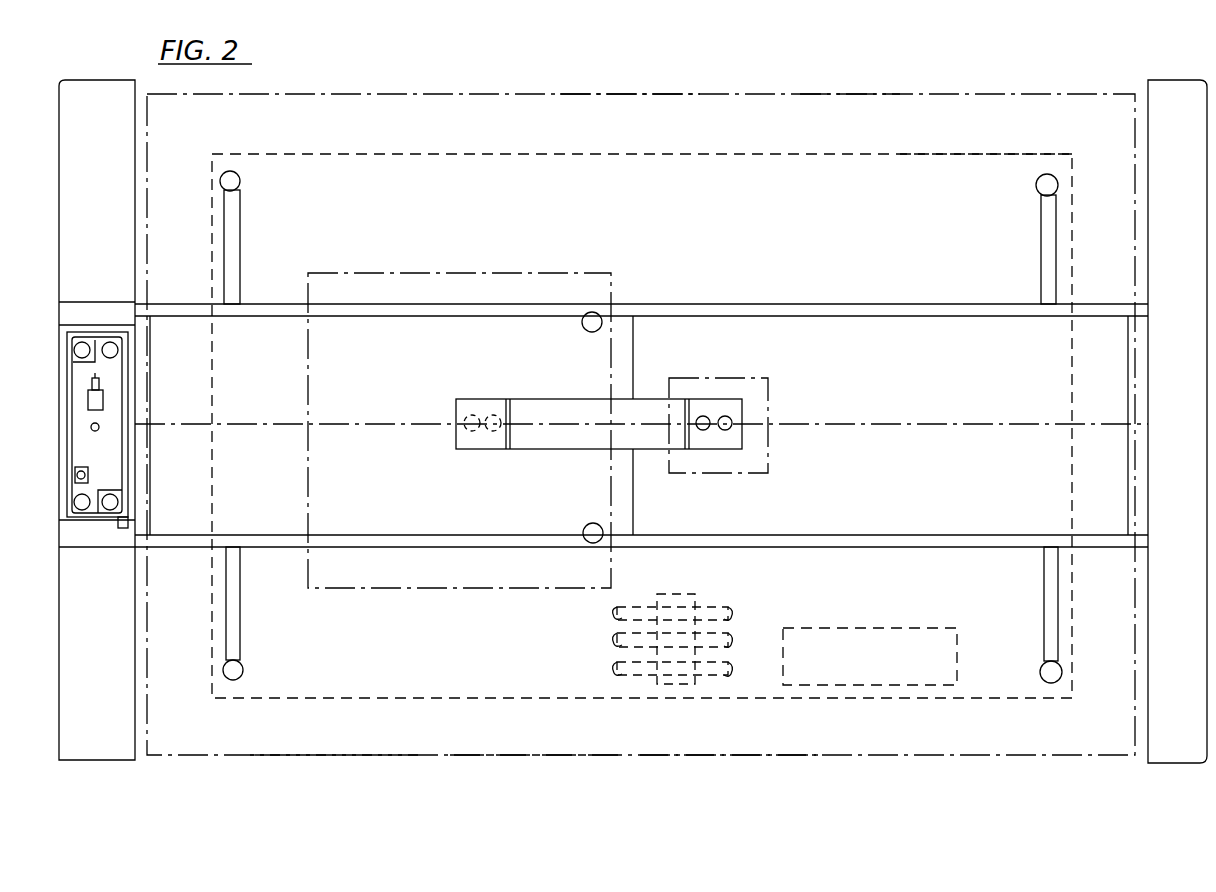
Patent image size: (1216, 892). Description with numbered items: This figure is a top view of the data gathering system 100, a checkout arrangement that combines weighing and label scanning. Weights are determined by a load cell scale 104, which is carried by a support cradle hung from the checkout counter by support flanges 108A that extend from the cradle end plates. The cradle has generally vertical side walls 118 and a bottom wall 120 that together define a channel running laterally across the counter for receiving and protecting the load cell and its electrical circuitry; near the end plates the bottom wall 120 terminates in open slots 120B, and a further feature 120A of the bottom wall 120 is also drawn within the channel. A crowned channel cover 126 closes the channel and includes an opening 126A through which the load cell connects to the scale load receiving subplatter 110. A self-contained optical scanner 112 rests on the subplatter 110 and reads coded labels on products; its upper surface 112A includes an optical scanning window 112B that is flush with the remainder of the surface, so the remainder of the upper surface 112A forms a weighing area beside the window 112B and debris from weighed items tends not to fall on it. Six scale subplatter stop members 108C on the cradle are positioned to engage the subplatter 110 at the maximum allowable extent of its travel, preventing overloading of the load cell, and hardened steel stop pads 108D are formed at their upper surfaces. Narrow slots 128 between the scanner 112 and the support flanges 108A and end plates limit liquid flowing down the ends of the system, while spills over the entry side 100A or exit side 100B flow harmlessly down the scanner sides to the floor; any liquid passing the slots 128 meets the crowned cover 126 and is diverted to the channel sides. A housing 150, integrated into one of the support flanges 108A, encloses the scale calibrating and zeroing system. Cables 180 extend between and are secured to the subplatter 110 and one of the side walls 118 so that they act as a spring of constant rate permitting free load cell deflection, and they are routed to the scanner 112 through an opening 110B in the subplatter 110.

The data gathering system 100 is at (862, 90).
The entry side 100A is at (625, 67).
The exit side 100B is at (365, 750).
The load cell scale 104 is at (963, 130).
The support flanges 108A is at (1146, 82).
The scale subplatter stop members 108C is at (240, 183).
The stop pads 108D is at (235, 192).
The scale load receiving subplatter 110 is at (368, 714).
The opening 110B is at (906, 630).
The optical scanner 112 is at (560, 742).
The upper surface 112A is at (750, 745).
The optical scanning window 112B is at (538, 268).
The side walls 118 is at (832, 304).
The bottom wall 120 is at (838, 514).
The carriage cross member 120A is at (633, 365).
The open slots 120B is at (142, 392).
The crowned channel cover 126 is at (958, 490).
The opening 126A is at (770, 393).
The narrow slots 128 is at (148, 100).
The housing 150 is at (93, 332).
The cables 180 is at (615, 628).